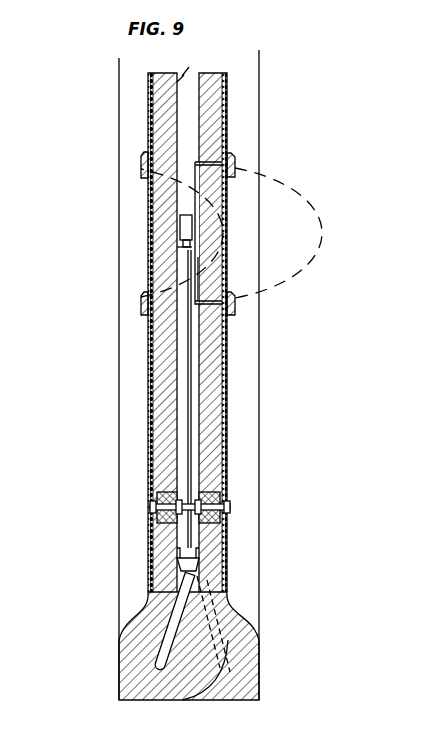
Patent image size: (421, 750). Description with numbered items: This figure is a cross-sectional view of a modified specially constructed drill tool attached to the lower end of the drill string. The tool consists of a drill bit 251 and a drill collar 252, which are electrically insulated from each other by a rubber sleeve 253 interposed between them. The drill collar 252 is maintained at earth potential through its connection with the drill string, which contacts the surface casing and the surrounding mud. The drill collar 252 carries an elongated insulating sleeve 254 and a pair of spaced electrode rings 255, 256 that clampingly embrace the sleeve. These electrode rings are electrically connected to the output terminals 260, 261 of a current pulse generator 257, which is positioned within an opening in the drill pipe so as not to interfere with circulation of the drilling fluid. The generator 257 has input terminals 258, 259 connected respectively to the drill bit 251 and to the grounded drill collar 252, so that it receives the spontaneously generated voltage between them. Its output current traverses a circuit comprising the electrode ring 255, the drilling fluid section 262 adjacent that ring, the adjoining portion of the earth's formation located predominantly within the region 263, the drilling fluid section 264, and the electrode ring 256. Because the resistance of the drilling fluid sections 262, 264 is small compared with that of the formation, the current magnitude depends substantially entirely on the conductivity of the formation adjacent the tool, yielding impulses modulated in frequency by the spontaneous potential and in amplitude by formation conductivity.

The drill bit 251 is at (248, 655).
The drill collar 252 is at (219, 372).
The rubber sleeve 253 is at (228, 515).
The insulating sleeve 254 is at (152, 370).
The electrode ring 255 is at (235, 160).
The electrode ring 256 is at (236, 305).
The current pulse generator 257 is at (190, 226).
The input terminal 258 is at (191, 258).
The input terminal 259 is at (179, 247).
The output terminal 260 is at (197, 187).
The output terminal 261 is at (197, 269).
The drilling fluid section 262 is at (127, 170).
The region 263 is at (190, 233).
The drilling fluid section 264 is at (128, 306).